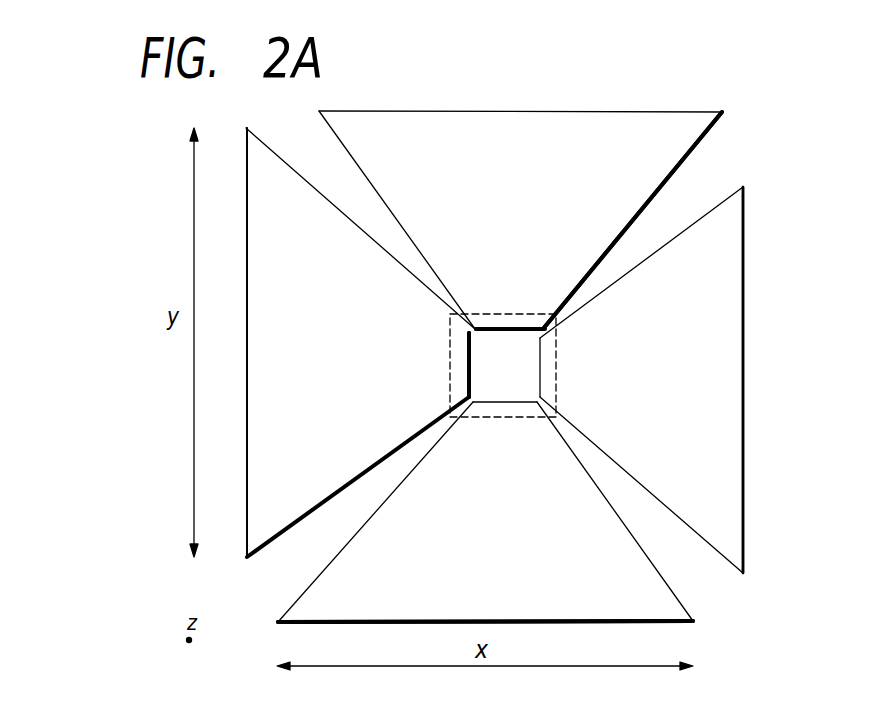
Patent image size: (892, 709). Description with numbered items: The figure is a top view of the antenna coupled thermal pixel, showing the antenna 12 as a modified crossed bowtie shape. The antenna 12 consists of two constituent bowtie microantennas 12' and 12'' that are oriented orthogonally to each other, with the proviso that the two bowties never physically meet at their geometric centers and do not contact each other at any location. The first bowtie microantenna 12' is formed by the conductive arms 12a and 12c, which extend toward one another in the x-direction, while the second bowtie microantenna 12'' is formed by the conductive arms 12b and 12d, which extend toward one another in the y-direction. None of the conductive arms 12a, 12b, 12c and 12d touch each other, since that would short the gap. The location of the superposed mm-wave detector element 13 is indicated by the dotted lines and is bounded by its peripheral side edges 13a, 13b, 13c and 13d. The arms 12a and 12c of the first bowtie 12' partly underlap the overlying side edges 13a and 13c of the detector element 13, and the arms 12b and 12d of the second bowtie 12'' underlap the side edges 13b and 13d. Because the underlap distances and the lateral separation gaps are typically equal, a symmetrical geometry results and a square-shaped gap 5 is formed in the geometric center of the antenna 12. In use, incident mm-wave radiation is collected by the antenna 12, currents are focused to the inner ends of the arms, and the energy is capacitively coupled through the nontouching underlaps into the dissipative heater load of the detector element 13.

The square-shaped gap 5 is at (512, 342).
The antenna 12 is at (494, 366).
The conductive arm 12a is at (360, 342).
The conductive arm 12b is at (520, 220).
The conductive arm 12c is at (641, 380).
The conductive arm 12d is at (688, 386).
The first bowtie microantenna 12' is at (488, 350).
The second bowtie microantenna 12'' is at (500, 356).
The mm-wave detector element 13 is at (505, 360).
The side edge 13a is at (447, 358).
The side edge 13b is at (492, 313).
The side edge 13c is at (558, 350).
The side edge 13d is at (500, 418).